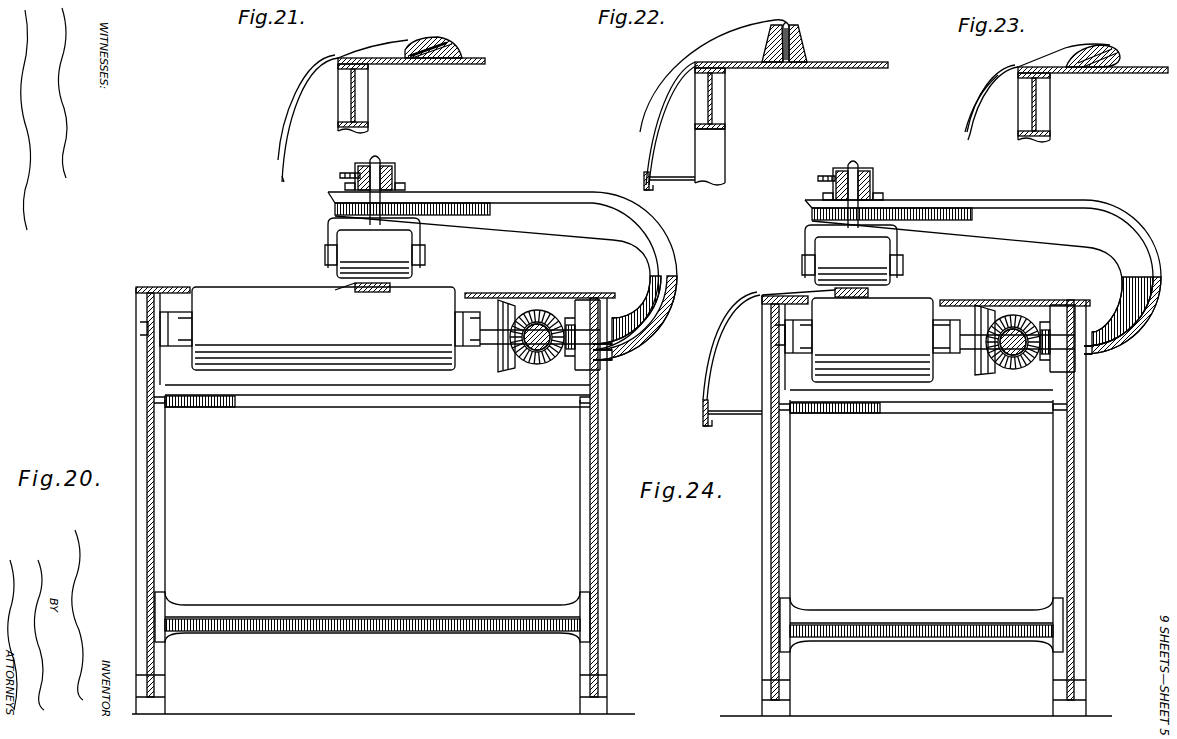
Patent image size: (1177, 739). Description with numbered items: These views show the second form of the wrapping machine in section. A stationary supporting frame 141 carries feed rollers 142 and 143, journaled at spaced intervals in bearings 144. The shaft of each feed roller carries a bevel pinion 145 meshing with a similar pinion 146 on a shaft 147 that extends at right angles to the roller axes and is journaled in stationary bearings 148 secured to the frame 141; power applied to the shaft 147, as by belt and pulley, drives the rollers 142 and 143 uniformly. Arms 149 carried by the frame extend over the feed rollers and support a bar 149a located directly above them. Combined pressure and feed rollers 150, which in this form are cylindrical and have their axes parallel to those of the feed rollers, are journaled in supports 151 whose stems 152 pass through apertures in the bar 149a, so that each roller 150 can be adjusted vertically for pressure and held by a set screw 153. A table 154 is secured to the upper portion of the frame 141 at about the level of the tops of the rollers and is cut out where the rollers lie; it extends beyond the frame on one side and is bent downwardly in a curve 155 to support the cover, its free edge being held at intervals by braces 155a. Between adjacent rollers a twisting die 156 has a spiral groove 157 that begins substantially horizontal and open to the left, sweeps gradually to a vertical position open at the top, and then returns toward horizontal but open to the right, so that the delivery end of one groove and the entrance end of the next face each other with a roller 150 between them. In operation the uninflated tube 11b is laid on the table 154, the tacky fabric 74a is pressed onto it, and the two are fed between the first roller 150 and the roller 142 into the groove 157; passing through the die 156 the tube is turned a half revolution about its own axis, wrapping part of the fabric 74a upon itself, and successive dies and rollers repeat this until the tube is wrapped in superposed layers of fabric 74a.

In FIG. 21, the tube 11b is at (420, 43).
In FIG. 20, the tube 11b is at (392, 290).
In FIG. 24, the tube 11b is at (815, 292).
In FIG. 21, the tacky fabric 74a is at (291, 108).
In FIG. 22, the tacky fabric 74a is at (735, 34).
In FIG. 23, the tacky fabric 74a is at (988, 103).
In FIG. 24, the tacky fabric 74a is at (731, 346).
In FIG. 20, the stationary supporting frame 141 is at (604, 571).
In FIG. 24, the stationary supporting frame 141 is at (1087, 549).
In FIG. 20, the feed roller 142 is at (323, 328).
In FIG. 24, the feed roller 143 is at (872, 340).
In FIG. 20, the bearings 144 is at (185, 333).
In FIG. 24, the bearings 144 is at (800, 350).
In FIG. 20, the bevel pinion 145 is at (505, 300).
In FIG. 24, the bevel pinion 145 is at (985, 306).
In FIG. 20, the bevel pinion 146 is at (547, 314).
In FIG. 24, the bevel pinion 146 is at (1023, 318).
In FIG. 20, the shaft 147 is at (539, 344).
In FIG. 24, the shaft 147 is at (1017, 350).
In FIG. 20, the stationary bearings 148 is at (600, 368).
In FIG. 24, the stationary bearings 148 is at (1058, 342).
In FIG. 20, the arm 149 is at (515, 203).
In FIG. 24, the arm 149 is at (1088, 196).
In FIG. 20, the bar 149a is at (384, 179).
In FIG. 24, the bar 149a is at (878, 180).
In FIG. 20, the pressure and feed roller 150 is at (374, 254).
In FIG. 24, the pressure and feed roller 150 is at (852, 261).
In FIG. 20, the support 151 is at (417, 243).
In FIG. 24, the support 151 is at (808, 243).
In FIG. 20, the stem 152 is at (380, 158).
In FIG. 24, the stem 152 is at (858, 163).
In FIG. 20, the set screw 153 is at (340, 176).
In FIG. 24, the set screw 153 is at (818, 178).
In FIG. 21, the table 154 is at (466, 64).
In FIG. 22, the table 154 is at (890, 62).
In FIG. 23, the table 154 is at (1145, 74).
In FIG. 20, the table 154 is at (476, 292).
In FIG. 24, the table 154 is at (948, 300).
In FIG. 21, the curved downward bend of table 155 is at (281, 176).
In FIG. 22, the curved downward bend of table 155 is at (645, 156).
In FIG. 23, the curved downward bend of table 155 is at (972, 130).
In FIG. 24, the curved downward bend of table 155 is at (703, 404).
In FIG. 22, the brace 155a is at (664, 180).
In FIG. 24, the brace 155a is at (736, 415).
In FIG. 21, the twisting die 156 is at (454, 43).
In FIG. 22, the twisting die 156 is at (804, 57).
In FIG. 23, the twisting die 156 is at (1122, 62).
In FIG. 22, the spiral groove 157 is at (792, 24).